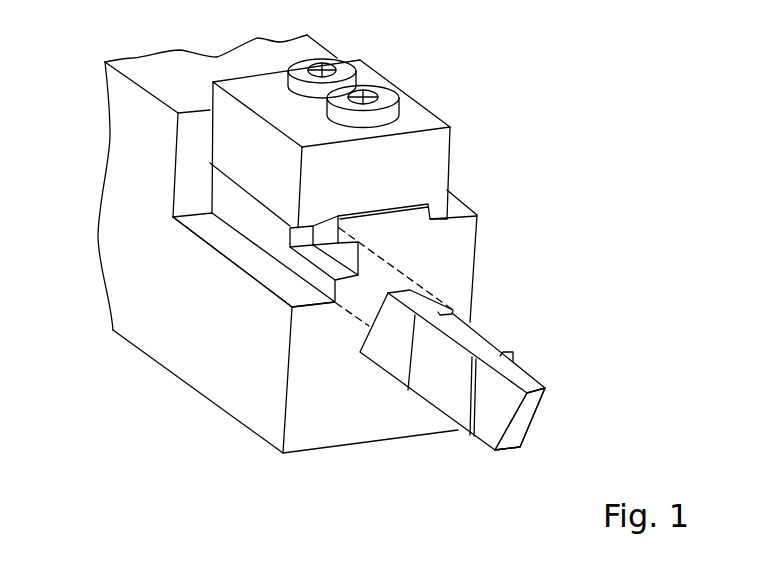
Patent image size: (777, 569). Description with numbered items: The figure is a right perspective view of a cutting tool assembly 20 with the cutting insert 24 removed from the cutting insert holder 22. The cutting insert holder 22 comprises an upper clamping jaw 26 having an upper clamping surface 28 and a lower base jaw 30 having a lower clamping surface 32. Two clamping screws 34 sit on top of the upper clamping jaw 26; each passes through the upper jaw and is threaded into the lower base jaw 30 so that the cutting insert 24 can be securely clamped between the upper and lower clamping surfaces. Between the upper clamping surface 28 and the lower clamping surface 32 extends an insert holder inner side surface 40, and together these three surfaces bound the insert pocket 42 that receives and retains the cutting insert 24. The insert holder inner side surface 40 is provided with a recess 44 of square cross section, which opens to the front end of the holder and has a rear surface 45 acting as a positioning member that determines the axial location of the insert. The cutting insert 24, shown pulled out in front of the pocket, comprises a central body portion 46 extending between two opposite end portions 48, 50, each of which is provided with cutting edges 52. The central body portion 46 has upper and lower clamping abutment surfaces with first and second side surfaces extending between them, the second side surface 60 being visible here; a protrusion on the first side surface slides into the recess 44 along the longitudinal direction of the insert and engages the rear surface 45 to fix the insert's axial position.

The cutting tool assembly 20 is at (547, 63).
The cutting insert holder 22 is at (427, 52).
The cutting insert 24 is at (582, 344).
The upper clamping jaw 26 is at (400, 165).
The upper clamping surface 28 is at (255, 177).
The lower base jaw 30 is at (228, 360).
The lower clamping surface 32 is at (252, 262).
The clamping screws 34 is at (343, 68).
The insert holder inner side surface 40 is at (250, 223).
The insert pocket 42 is at (300, 312).
The recess 44 is at (354, 262).
The rear surface 45 is at (290, 247).
The central body portion 46 is at (494, 321).
The end portion 48 is at (508, 460).
The end portion 50 is at (365, 372).
The cutting edges 52 is at (538, 402).
The second side surface 60 is at (443, 387).